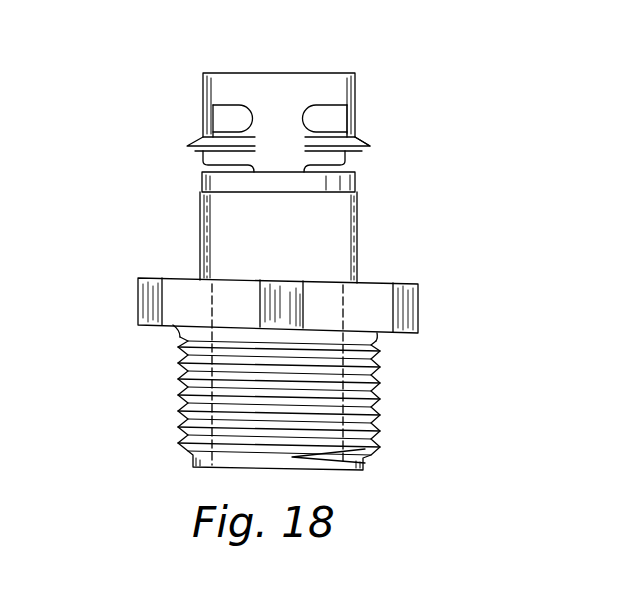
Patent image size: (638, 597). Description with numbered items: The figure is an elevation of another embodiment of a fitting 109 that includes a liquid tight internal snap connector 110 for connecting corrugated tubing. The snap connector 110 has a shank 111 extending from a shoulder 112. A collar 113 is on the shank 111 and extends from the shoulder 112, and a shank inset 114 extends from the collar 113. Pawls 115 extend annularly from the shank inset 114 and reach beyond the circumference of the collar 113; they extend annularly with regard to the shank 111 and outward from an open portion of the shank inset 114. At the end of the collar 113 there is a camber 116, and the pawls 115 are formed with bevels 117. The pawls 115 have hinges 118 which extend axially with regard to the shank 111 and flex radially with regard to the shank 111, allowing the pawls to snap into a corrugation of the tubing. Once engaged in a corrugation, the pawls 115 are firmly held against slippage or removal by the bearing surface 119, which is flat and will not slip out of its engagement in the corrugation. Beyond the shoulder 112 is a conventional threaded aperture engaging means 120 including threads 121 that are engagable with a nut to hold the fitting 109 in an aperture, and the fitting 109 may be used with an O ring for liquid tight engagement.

The fitting 109 is at (183, 220).
The liquid tight internal snap connector 110 is at (450, 240).
The shank 111 is at (313, 93).
The shoulder 112 is at (413, 285).
The collar 113 is at (360, 256).
The shank inset 114 is at (200, 89).
The pawls 115 is at (190, 147).
The camber 116 is at (360, 192).
The bevels 117 is at (360, 146).
The hinges 118 is at (250, 143).
The bearing surface 119 is at (352, 153).
The threaded aperture engaging means 120 is at (160, 370).
The threads 121 is at (183, 423).